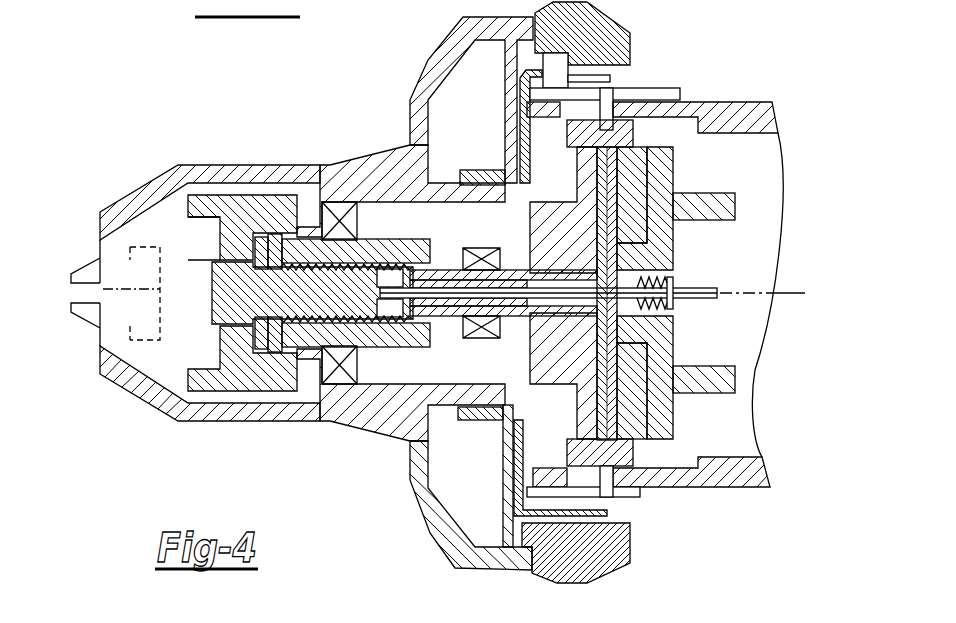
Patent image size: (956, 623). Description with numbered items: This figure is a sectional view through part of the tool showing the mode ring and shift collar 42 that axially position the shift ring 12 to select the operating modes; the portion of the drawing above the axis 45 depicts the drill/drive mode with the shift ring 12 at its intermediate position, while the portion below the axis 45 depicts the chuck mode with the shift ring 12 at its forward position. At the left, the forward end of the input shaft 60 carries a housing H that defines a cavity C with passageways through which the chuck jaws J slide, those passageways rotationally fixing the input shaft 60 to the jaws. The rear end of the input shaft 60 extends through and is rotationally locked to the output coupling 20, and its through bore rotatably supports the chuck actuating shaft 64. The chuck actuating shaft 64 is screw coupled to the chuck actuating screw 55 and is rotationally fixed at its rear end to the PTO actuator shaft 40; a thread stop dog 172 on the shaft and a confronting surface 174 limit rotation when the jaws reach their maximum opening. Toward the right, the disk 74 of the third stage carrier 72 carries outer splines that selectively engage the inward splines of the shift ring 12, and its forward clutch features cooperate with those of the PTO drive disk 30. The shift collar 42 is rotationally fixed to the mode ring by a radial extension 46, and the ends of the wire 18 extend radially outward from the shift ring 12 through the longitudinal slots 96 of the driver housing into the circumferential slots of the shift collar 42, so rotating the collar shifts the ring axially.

The housing H is at (107, 250).
The cavity C is at (173, 290).
The chuck jaws J is at (200, 215).
The confronting surface 174 is at (255, 235).
The thread stop dog 172 is at (266, 238).
The chuck actuating screw 55 is at (207, 297).
The chuck actuating shaft 64 is at (262, 352).
The input shaft 60 is at (284, 384).
The output coupling 20 is at (529, 365).
The radial extension 46 is at (516, 80).
The wire 18 is at (630, 95).
The shift collar 42 is at (647, 99).
The shift ring 12 is at (632, 133).
The disk 74 is at (648, 175).
The third stage carrier 72 is at (674, 232).
The PTO actuator shaft 40 is at (695, 303).
The axis 45 is at (773, 307).
The PTO drive disk 30 is at (618, 403).
The longitudinal slots 96 is at (601, 483).